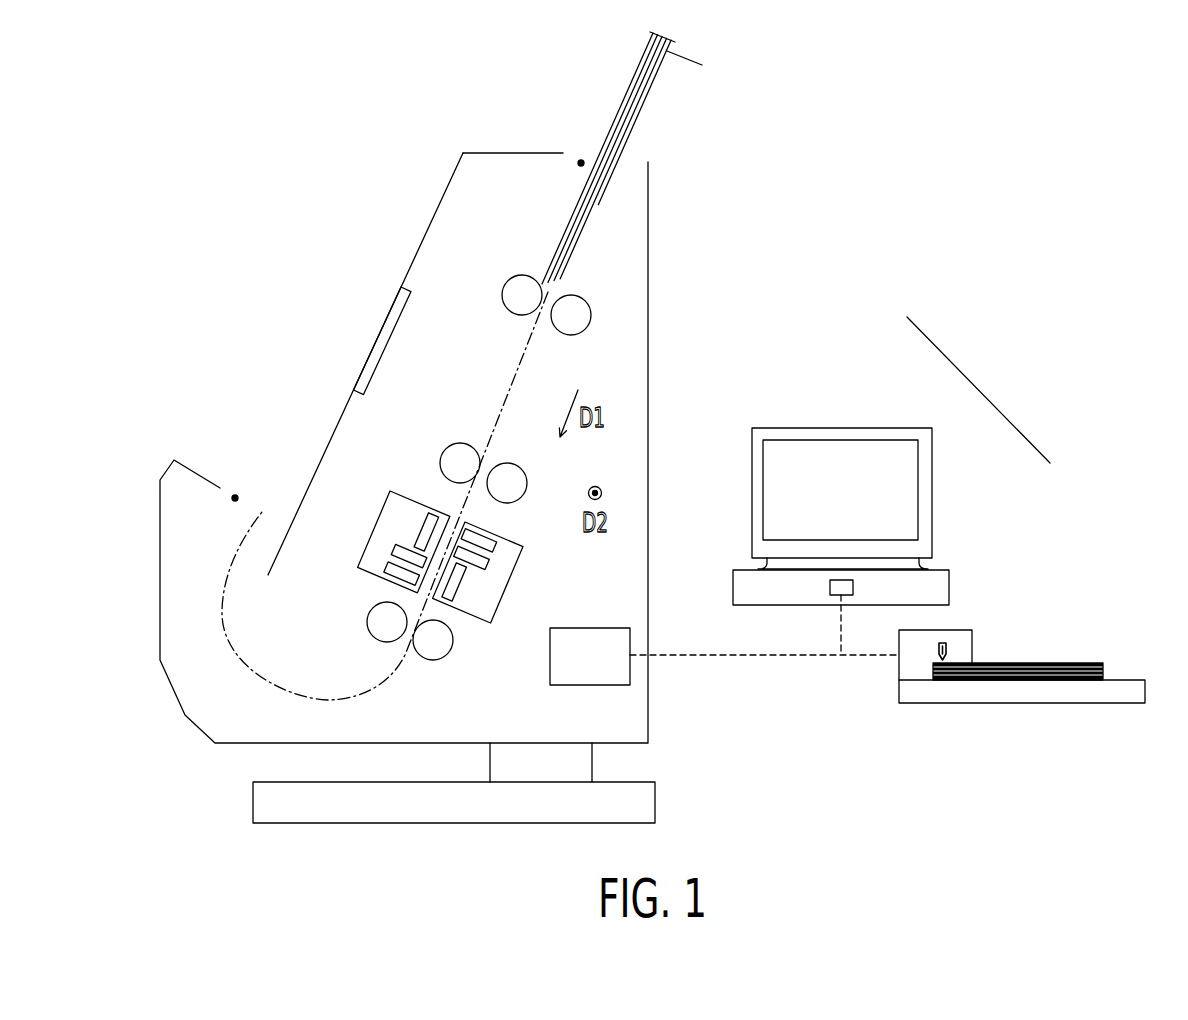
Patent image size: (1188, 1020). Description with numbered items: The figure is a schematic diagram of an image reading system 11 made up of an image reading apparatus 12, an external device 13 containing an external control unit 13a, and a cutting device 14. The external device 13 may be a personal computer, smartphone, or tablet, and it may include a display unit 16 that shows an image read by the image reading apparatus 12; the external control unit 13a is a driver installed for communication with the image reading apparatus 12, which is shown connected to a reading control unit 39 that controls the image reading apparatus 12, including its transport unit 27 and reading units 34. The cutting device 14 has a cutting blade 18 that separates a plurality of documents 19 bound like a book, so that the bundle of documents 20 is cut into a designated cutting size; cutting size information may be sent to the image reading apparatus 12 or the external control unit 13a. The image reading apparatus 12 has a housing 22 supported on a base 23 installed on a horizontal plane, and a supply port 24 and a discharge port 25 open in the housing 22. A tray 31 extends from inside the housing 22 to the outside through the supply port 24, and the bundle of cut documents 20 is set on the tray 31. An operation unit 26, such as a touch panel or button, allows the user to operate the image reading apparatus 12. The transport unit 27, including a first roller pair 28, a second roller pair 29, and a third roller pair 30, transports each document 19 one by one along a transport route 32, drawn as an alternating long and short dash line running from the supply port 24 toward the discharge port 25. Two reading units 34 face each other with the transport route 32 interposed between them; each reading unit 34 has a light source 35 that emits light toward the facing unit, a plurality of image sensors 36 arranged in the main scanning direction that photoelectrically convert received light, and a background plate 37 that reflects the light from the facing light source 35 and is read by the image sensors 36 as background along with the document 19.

The image reading system 11 is at (982, 391).
The image reading apparatus 12 is at (854, 327).
The external device 13 is at (932, 447).
The external control unit 13a is at (830, 590).
The cutting device 14 is at (1024, 507).
The display unit 16 is at (786, 484).
The cutting blade 18 is at (943, 647).
The document 19 is at (642, 67).
The bundle of documents 20 is at (597, 96).
The housing 22 is at (436, 210).
The base 23 is at (657, 798).
The supply port 24 is at (581, 163).
The discharge port 25 is at (235, 495).
The operation unit 26 is at (380, 338).
The transport unit 27 is at (486, 244).
The first roller pair 28 is at (566, 335).
The second roller pair 29 is at (497, 467).
The third roller pair 30 is at (426, 659).
The tray 31 is at (704, 64).
The transport route 32 is at (514, 375).
The reading unit 34 is at (386, 503).
The light source 35 is at (380, 568).
The image sensor 36 is at (392, 548).
The background plate 37 is at (430, 513).
The reading control unit 39 is at (612, 628).